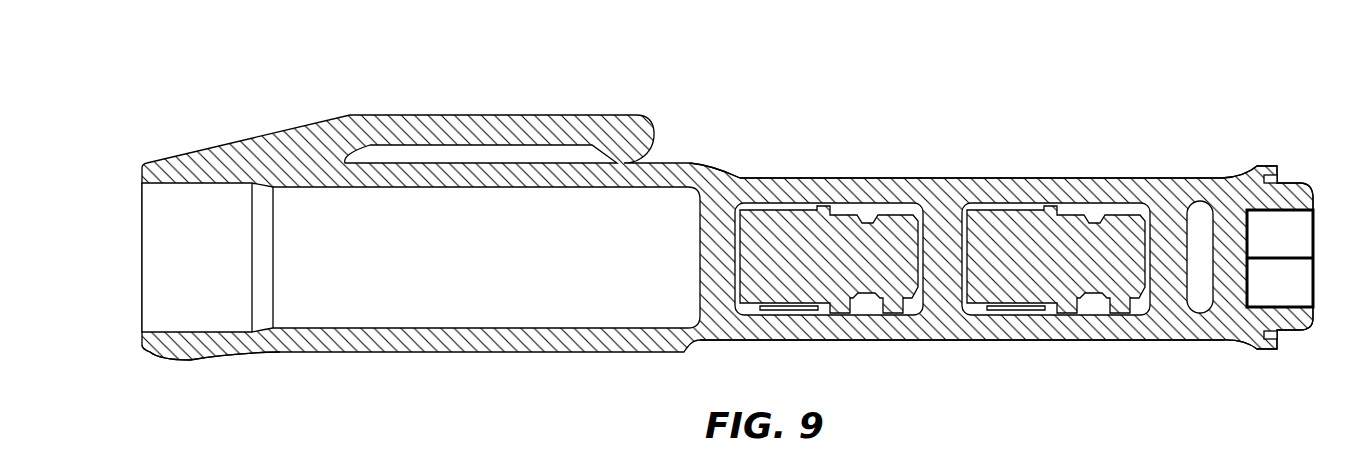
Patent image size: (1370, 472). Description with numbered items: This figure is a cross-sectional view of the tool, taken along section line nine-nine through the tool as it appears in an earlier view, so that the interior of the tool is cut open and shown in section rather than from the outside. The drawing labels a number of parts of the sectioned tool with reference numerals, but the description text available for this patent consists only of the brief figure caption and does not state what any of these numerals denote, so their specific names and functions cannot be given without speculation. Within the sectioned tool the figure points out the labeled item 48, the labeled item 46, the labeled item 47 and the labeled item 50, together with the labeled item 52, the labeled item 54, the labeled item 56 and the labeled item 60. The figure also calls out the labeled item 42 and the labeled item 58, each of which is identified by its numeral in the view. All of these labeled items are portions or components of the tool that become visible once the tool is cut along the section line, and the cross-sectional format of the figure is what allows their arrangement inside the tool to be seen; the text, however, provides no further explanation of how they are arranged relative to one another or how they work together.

The terminal block 42 is at (790, 287).
The connector housing portion 46 is at (787, 113).
The transition shoulder 47 is at (700, 162).
The handle portion 48 is at (202, 133).
The end portion 50 is at (1152, 156).
The cavity 52 is at (298, 224).
The bottom wall 54 is at (142, 330).
The recess 56 is at (1262, 237).
The receptacle 58 is at (866, 345).
The slot 60 is at (478, 117).